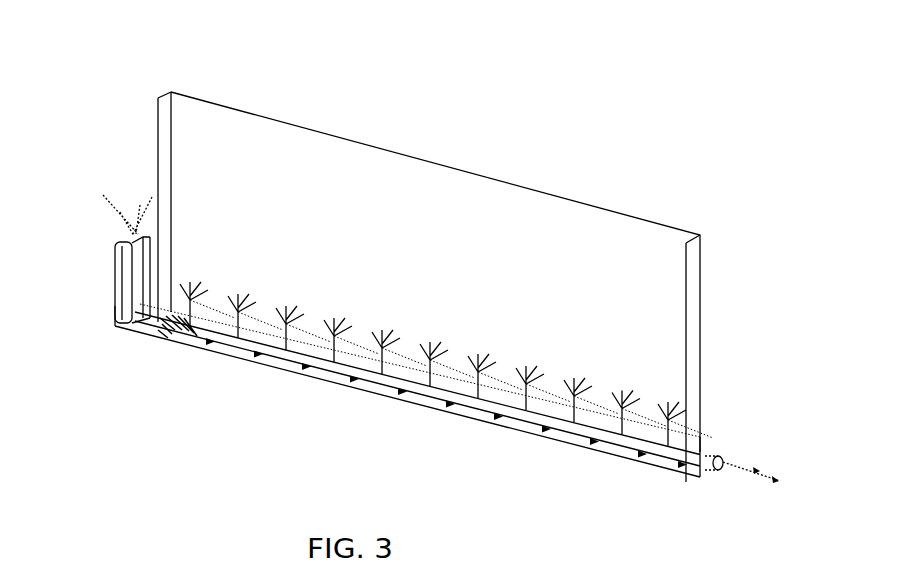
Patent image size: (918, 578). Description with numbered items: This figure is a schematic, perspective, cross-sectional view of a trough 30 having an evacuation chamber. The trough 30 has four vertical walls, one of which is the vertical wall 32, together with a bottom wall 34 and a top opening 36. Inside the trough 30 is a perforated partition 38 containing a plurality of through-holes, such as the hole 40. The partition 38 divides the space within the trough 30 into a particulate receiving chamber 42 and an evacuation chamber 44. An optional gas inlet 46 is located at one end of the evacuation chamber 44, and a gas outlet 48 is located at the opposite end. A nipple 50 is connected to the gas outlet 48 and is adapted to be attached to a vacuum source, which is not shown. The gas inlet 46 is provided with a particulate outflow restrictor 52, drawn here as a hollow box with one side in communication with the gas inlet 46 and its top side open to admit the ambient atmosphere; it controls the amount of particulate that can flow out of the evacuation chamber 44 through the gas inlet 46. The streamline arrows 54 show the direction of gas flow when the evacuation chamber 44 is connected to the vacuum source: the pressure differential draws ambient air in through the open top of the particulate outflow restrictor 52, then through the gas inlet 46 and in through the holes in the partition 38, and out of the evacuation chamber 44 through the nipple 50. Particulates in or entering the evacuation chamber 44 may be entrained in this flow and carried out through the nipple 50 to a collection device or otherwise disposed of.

The trough 30 is at (694, 112).
The vertical wall 32 is at (472, 188).
The bottom wall 34 is at (227, 342).
The top opening 36 is at (252, 142).
The perforated partition 38 is at (320, 350).
The hole 40 is at (423, 372).
The particulate receiving chamber 42 is at (567, 260).
The evacuation chamber 44 is at (507, 413).
The gas inlet 46 is at (167, 332).
The gas outlet 48 is at (688, 460).
The nipple 50 is at (703, 450).
The particulate outflow restrictor 52 is at (118, 278).
The streamline arrows 54 is at (128, 195).